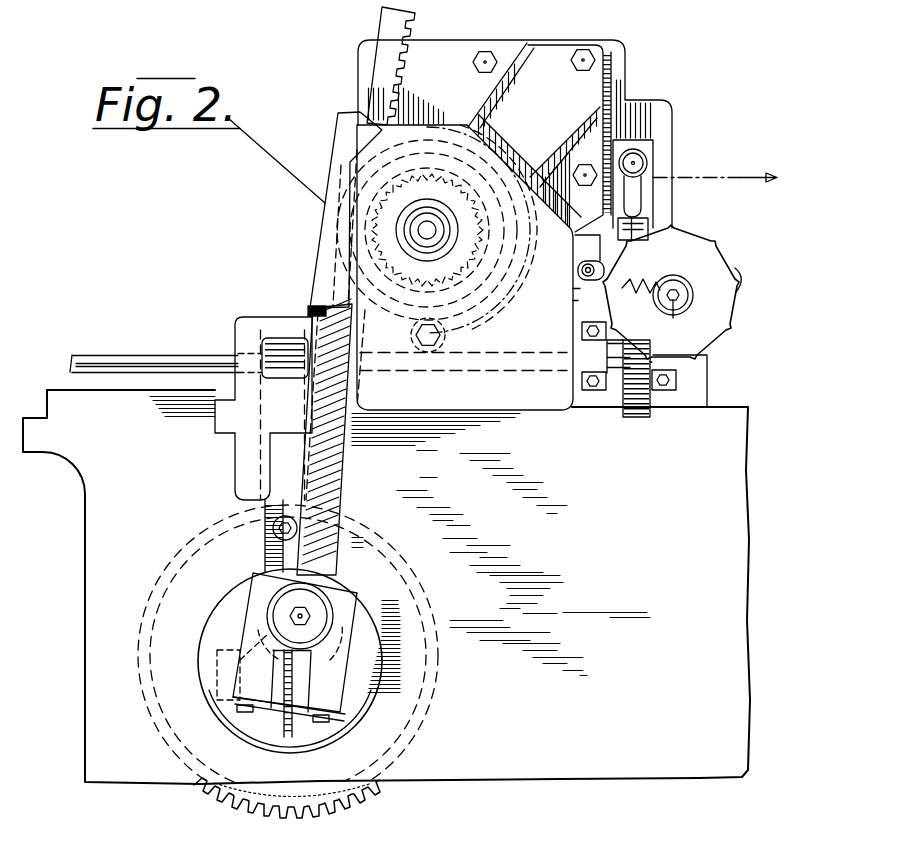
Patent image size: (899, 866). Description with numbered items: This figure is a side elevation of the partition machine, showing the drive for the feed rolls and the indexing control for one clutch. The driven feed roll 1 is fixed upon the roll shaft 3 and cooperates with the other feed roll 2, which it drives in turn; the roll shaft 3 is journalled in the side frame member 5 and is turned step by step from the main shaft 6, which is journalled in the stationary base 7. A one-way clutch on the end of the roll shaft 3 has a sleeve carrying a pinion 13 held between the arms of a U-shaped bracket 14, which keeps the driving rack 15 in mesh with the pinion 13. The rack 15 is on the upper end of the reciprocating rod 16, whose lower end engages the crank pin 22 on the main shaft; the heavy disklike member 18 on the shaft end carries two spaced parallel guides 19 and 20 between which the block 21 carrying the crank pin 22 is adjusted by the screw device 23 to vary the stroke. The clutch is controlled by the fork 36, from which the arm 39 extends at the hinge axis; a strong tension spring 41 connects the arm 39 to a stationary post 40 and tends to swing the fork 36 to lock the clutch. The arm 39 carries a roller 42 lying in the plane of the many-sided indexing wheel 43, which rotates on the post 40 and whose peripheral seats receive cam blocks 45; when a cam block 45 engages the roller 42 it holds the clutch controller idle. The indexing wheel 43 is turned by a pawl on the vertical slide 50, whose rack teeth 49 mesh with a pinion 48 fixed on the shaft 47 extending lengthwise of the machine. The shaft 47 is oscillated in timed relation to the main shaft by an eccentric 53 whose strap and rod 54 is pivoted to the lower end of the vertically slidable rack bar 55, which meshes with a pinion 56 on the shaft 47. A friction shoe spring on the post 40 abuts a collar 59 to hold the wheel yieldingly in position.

The feed roll 1 is at (372, 188).
The feed roll 2 is at (555, 163).
The roll shaft 3 is at (437, 229).
The side frame member 5 is at (447, 53).
The main shaft 6 is at (237, 677).
The stationary base 7 is at (100, 577).
The pinion 13 is at (473, 327).
The U-shaped bracket 14 is at (345, 252).
The driving rack 15 is at (403, 78).
The reciprocating rod 16 is at (347, 477).
The disklike member 18 is at (217, 622).
The guide 19 is at (340, 613).
The guide 20 is at (287, 630).
The block 21 is at (352, 684).
The crank pin 22 is at (307, 597).
The screw device 23 is at (273, 725).
The fork 36 is at (498, 140).
The arm 39 is at (581, 264).
The stationary post 40 is at (670, 300).
The tension spring 41 is at (632, 300).
The roller 42 is at (600, 292).
The indexing wheel 43 is at (710, 262).
The cam block 45 is at (625, 242).
The shaft 47 is at (88, 357).
The pinion 48 is at (632, 408).
The rack teeth 49 is at (637, 410).
The vertical slide 50 is at (650, 157).
The eccentric 53 is at (263, 747).
The eccentric strap and rod 54 is at (274, 552).
The rack bar 55 is at (285, 470).
The pinion 56 is at (292, 340).
The collar 59 is at (678, 278).